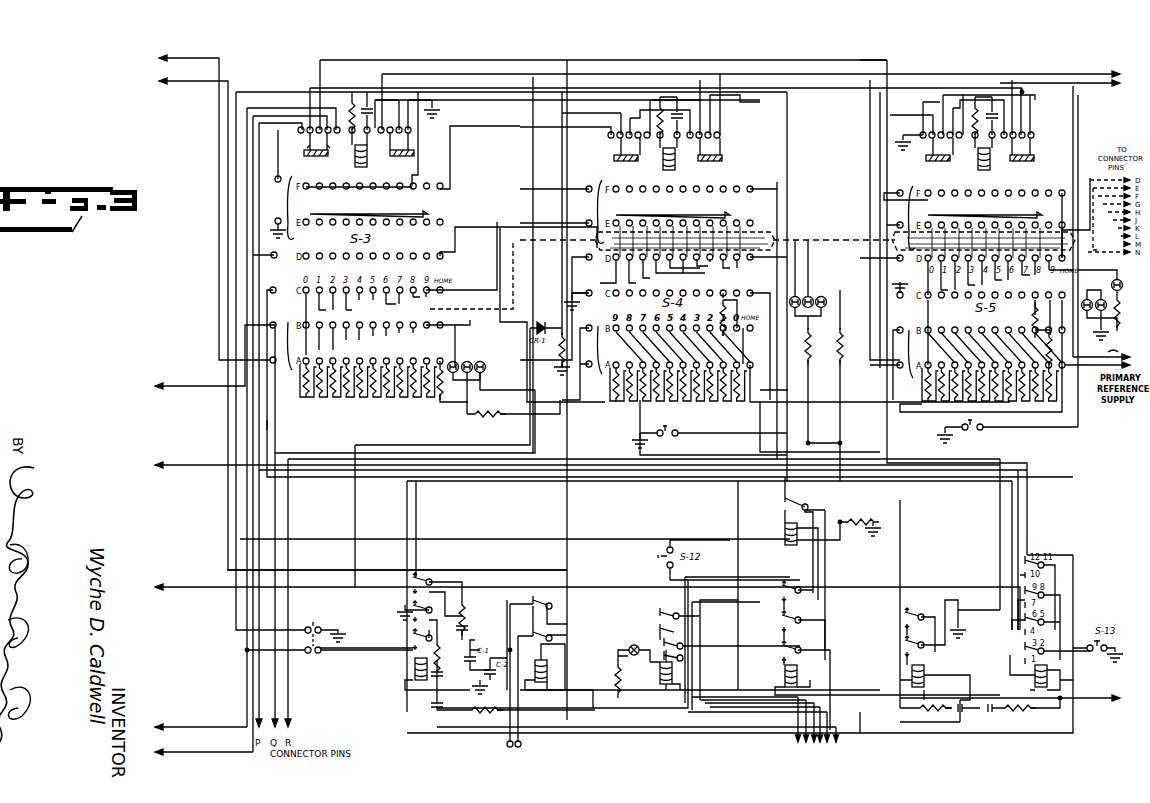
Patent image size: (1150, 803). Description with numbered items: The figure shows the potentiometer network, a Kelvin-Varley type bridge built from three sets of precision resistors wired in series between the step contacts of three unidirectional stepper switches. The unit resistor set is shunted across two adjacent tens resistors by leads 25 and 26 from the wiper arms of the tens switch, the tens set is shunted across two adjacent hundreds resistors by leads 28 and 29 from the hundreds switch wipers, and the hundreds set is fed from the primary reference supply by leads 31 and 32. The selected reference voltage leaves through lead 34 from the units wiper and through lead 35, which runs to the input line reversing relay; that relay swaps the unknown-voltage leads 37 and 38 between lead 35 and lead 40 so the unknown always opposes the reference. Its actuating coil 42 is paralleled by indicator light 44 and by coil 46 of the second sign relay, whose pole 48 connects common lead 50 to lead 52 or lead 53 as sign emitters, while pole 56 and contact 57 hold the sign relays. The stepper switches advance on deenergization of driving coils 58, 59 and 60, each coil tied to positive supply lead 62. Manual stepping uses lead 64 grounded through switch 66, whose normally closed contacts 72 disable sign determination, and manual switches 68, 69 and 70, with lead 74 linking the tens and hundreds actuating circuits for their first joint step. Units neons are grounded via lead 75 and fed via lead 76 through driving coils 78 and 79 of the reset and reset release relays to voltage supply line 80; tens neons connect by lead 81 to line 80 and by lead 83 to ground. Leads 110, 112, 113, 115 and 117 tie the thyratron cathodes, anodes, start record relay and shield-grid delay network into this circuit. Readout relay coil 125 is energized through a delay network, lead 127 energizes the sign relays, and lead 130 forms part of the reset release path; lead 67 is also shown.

The lead 34 is at (213, 60).
The lead 40 is at (194, 84).
The lead 64 is at (264, 92).
The conductor 67 is at (789, 118).
The lead 62 is at (1066, 82).
The lead 74 is at (1035, 100).
The manual switch 68 is at (1078, 120).
The driving coil 58 is at (358, 160).
The driving coil 59 is at (664, 166).
The driving coil 60 is at (976, 168).
The lead 83 is at (557, 295).
The lead 81 is at (812, 350).
The lead 29 is at (826, 378).
The lead 28 is at (806, 396).
The lead 25 is at (431, 400).
The lead 26 is at (457, 404).
The lead 75 is at (506, 416).
The lead 76 is at (270, 427).
The lead 112 is at (192, 386).
The lead 110 is at (198, 466).
The manual switch 69 is at (666, 440).
The manual switch 70 is at (980, 436).
The lead 35 is at (910, 425).
The lead 31 is at (1096, 357).
The lead 32 is at (1116, 357).
The lead 117 is at (195, 587).
The switch 66 is at (318, 628).
The normally closed contacts 72 is at (311, 652).
The lead 113 is at (213, 719).
The lead 115 is at (211, 757).
The driving coil 125 is at (415, 666).
The lead 37 is at (506, 722).
The lead 38 is at (520, 722).
The lead 127 is at (595, 702).
The actuating coil 42 is at (548, 670).
The indicator light 44 is at (630, 646).
The coil 46 is at (658, 675).
The pole 48 is at (660, 612).
The lead 52 is at (658, 624).
The lead 53 is at (692, 603).
The pole 56 is at (678, 643).
The contact 57 is at (678, 657).
The common lead 50 is at (700, 660).
The lead 130 is at (905, 515).
The driving coil 79 is at (900, 680).
The driving coil 78 is at (1034, 670).
The voltage supply line 80 is at (1100, 700).